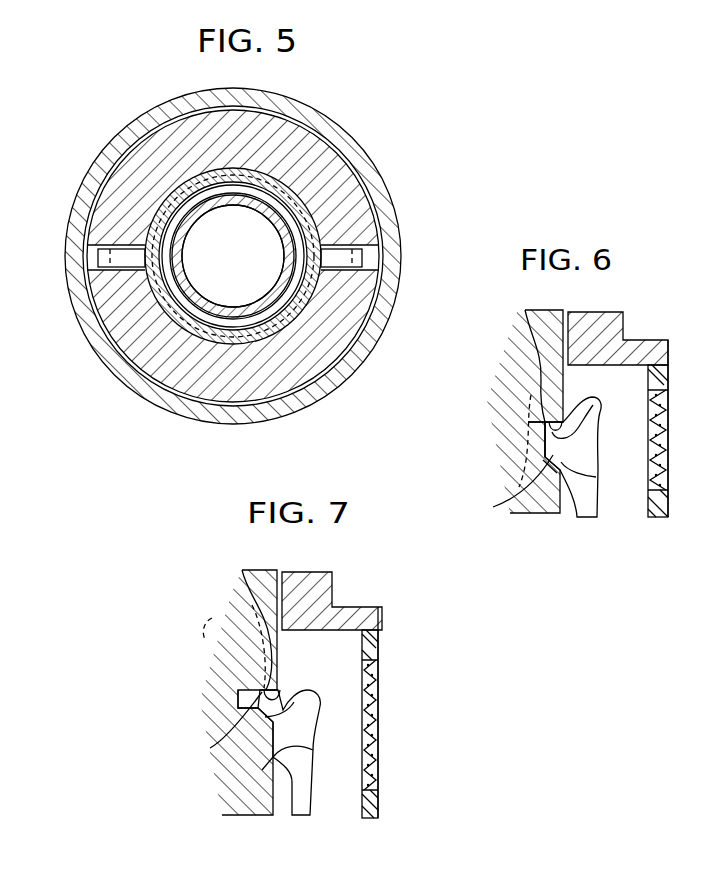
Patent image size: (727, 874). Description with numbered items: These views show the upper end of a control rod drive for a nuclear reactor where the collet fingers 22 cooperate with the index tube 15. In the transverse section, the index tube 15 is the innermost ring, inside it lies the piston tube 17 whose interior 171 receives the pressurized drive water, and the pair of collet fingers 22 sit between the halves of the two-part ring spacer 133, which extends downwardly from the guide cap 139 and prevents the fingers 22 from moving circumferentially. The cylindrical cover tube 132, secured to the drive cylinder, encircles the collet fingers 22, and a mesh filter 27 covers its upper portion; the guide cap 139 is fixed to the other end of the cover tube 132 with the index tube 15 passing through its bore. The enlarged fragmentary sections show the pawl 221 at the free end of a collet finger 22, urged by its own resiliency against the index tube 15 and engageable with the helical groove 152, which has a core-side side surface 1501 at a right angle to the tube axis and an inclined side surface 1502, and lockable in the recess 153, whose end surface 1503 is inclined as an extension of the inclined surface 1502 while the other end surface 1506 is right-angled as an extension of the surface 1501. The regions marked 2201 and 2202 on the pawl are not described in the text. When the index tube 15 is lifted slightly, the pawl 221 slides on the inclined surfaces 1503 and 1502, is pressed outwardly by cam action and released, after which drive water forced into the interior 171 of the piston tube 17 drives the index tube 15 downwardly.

In FIG. 5, the index tube 15 is at (307, 232).
In FIG. 6, the index tube 15 is at (502, 457).
In FIG. 7, the index tube 15 is at (238, 697).
In FIG. 5, the piston tube 17 is at (183, 263).
In FIG. 5, the collet fingers 22 is at (360, 250).
In FIG. 6, the collet fingers 22 is at (592, 434).
In FIG. 7, the collet fingers 22 is at (320, 705).
In FIG. 6, the mesh filter 27 is at (668, 448).
In FIG. 7, the mesh filter 27 is at (379, 702).
In FIG. 5, the cover tube 132 is at (100, 352).
In FIG. 6, the cover tube 132 is at (668, 498).
In FIG. 7, the cover tube 132 is at (370, 781).
In FIG. 5, the ring spacer 133 is at (355, 321).
In FIG. 6, the guide cap 139 is at (620, 330).
In FIG. 7, the guide cap 139 is at (328, 590).
In FIG. 5, the helical groove 152 is at (345, 197).
In FIG. 7, the helical groove 152 is at (253, 600).
In FIG. 6, the recess 153 is at (520, 476).
In FIG. 7, the recess 153 is at (242, 708).
In FIG. 5, the interior of the piston tube 171 is at (207, 236).
In FIG. 6, the pawl 221 is at (598, 402).
In FIG. 7, the pawl 221 is at (294, 702).
In FIG. 6, the side surface 1501 is at (571, 420).
In FIG. 7, the side surface 1501 is at (279, 690).
In FIG. 6, the side surface 1502 is at (590, 474).
In FIG. 7, the side surface 1502 is at (313, 753).
In FIG. 6, the end surface 1503 is at (532, 392).
In FIG. 7, the end surface 1503 is at (251, 622).
In FIG. 7, the end surface 1506 is at (210, 748).
In FIG. 6, the seal contour 2201 is at (543, 370).
In FIG. 7, the seal contour 2201 is at (270, 640).
In FIG. 6, the secondary sealing lip 2202 is at (493, 507).
In FIG. 7, the secondary sealing lip 2202 is at (268, 762).